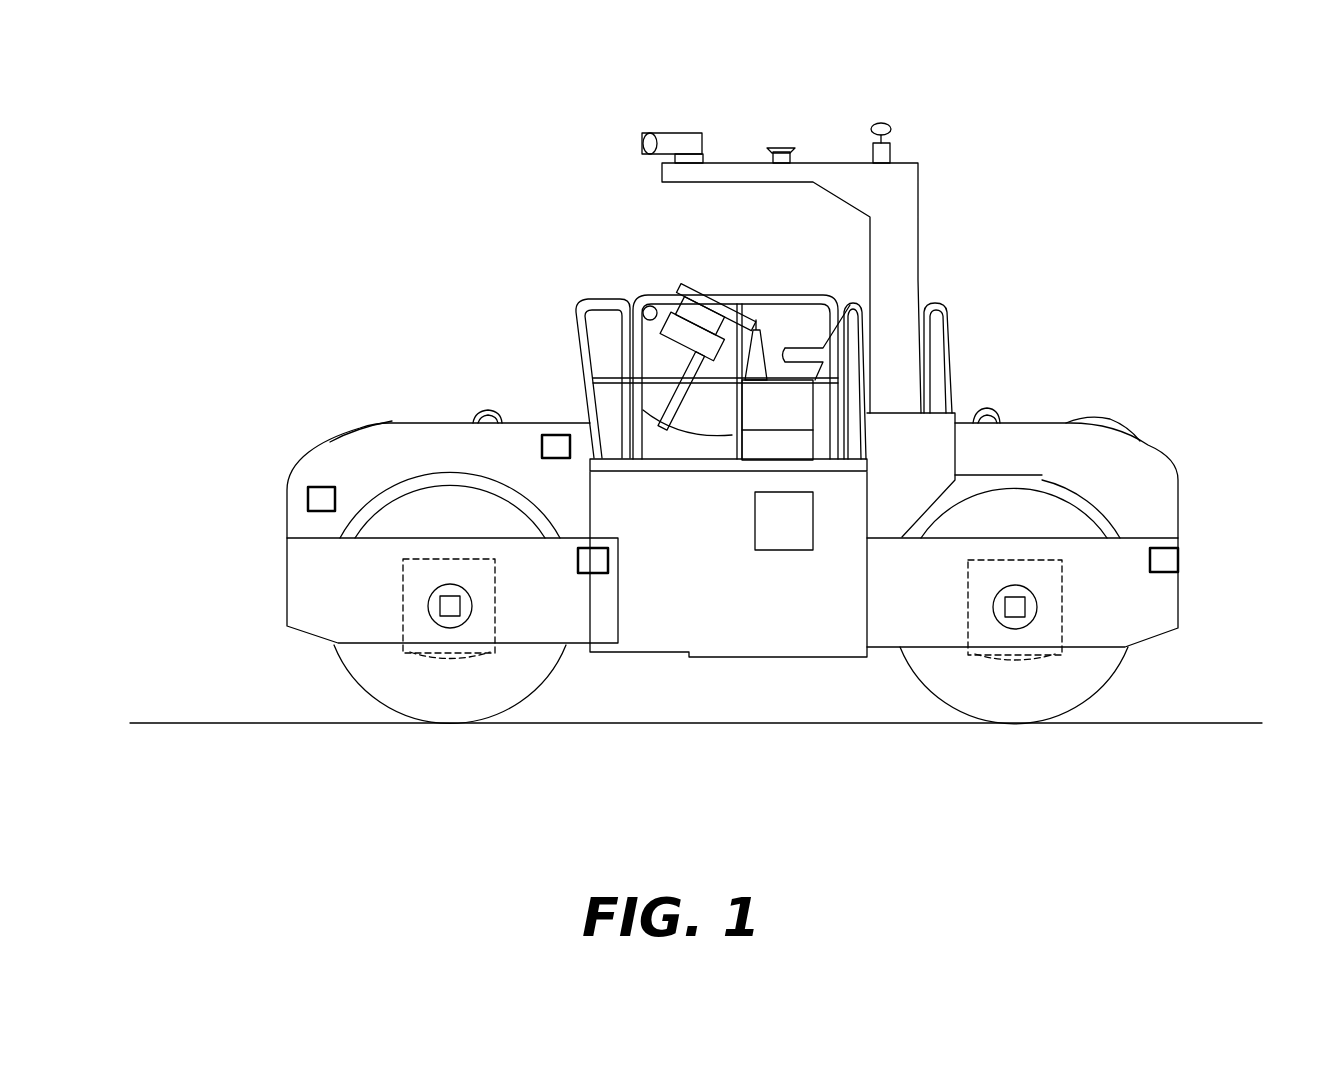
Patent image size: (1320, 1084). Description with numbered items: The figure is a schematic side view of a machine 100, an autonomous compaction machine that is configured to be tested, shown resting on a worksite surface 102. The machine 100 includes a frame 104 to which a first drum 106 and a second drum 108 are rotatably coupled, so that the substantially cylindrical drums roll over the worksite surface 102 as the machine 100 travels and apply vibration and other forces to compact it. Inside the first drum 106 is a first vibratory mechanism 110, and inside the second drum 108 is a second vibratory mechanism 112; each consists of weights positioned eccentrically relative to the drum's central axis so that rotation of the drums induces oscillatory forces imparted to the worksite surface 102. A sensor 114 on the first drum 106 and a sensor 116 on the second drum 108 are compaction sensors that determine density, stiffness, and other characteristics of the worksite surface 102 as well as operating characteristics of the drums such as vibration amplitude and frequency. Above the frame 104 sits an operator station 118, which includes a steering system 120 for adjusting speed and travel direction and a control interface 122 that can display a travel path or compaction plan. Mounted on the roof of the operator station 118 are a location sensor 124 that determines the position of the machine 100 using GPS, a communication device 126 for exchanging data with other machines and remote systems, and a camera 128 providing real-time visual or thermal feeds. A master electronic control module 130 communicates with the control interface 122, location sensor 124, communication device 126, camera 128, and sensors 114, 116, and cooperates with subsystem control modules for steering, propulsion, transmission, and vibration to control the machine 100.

The machine 100 is at (990, 152).
The worksite surface 102 is at (198, 722).
The frame 104 is at (1152, 468).
The first drum 106 is at (443, 695).
The second drum 108 is at (1017, 700).
The first vibratory mechanism 110 is at (403, 596).
The second vibratory mechanism 112 is at (1063, 625).
The sensor 114 is at (455, 618).
The sensor 116 is at (1025, 608).
The operator station 118 is at (553, 152).
The steering system 120 is at (765, 250).
The control interface 122 is at (680, 300).
The location sensor 124 is at (777, 148).
The communication device 126 is at (884, 130).
The camera 128 is at (680, 133).
The master electronic control module 130 is at (755, 520).